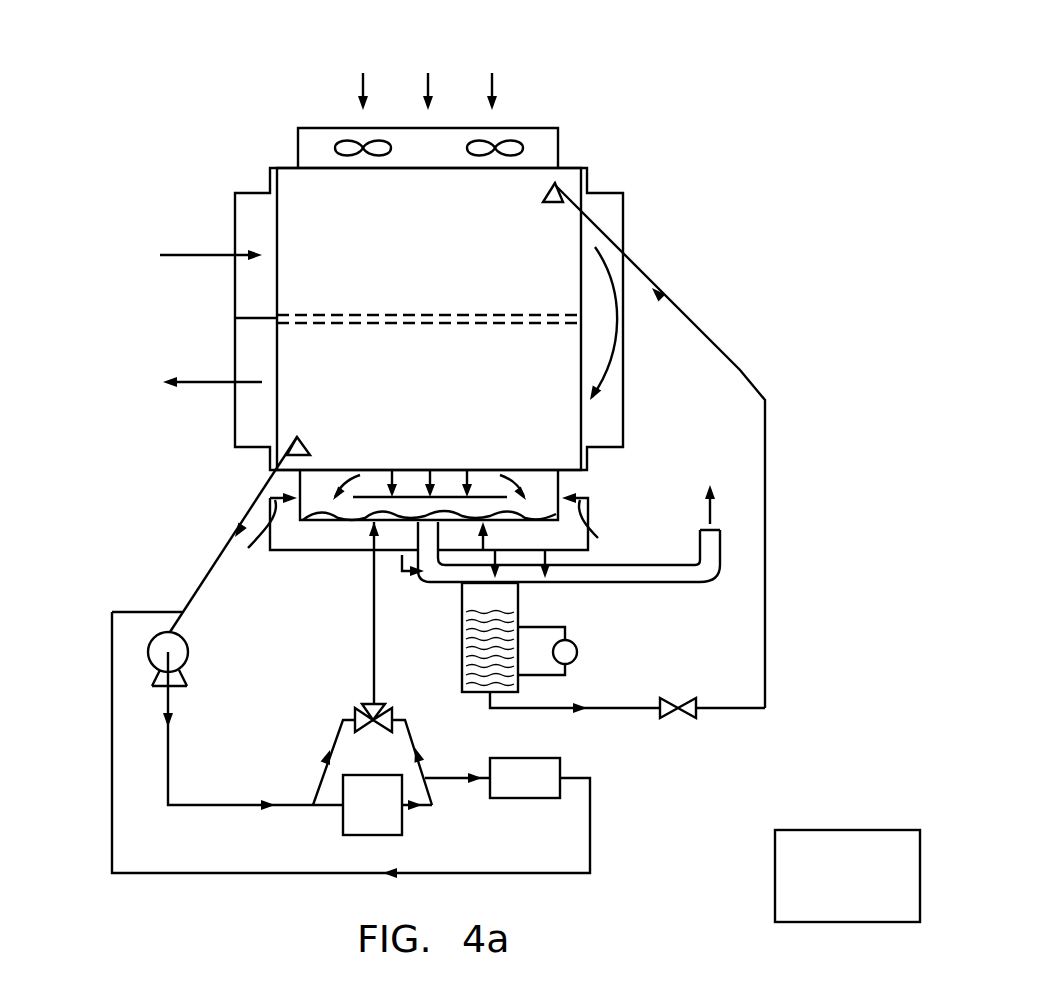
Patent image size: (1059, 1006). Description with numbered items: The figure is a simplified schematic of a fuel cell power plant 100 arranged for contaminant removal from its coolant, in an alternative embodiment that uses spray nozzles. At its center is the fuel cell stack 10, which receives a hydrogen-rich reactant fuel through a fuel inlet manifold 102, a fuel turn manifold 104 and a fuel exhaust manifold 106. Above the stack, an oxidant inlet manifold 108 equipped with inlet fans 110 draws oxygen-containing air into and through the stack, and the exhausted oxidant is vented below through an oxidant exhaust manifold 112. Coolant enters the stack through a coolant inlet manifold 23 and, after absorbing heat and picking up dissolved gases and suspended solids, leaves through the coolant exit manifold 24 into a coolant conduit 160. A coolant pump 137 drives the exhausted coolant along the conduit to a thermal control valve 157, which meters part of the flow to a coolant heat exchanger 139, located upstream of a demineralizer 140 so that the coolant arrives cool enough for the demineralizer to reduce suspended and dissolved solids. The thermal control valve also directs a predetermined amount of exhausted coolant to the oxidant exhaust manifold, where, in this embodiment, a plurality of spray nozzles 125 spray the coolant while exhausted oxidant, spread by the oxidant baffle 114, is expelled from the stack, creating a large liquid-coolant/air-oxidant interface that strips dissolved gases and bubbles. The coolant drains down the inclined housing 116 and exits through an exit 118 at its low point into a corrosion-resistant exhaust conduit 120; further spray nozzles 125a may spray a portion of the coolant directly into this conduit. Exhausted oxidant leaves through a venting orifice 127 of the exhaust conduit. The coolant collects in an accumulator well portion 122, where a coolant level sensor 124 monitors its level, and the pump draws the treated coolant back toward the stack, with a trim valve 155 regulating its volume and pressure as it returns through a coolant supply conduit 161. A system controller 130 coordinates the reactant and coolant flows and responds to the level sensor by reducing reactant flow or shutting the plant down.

The fuel cell power plant 100 is at (190, 108).
The fuel cell stack 10 is at (437, 252).
The coolant inlet manifold 23 is at (556, 196).
The coolant exit manifold 24 is at (300, 447).
The fuel inlet manifold 102 is at (248, 222).
The fuel turn manifold 104 is at (605, 222).
The fuel exhaust manifold 106 is at (250, 412).
The oxidant inlet manifold 108 is at (325, 138).
The inlet fans 110 is at (478, 155).
The oxidant exhaust manifold 112 is at (540, 483).
The oxidant baffle 114 is at (413, 497).
The inclined housing 116 is at (345, 524).
The exit 118 is at (437, 517).
The exhaust conduit 120 is at (603, 577).
The accumulator well portion 122 is at (462, 640).
The coolant level sensor 124 is at (580, 648).
The spray nozzles 125 is at (372, 544).
The spray nozzles 125a is at (402, 555).
The venting orifice 127 is at (703, 531).
The system controller 130 is at (815, 828).
The coolant pump 137 is at (180, 650).
The coolant heat exchanger 139 is at (343, 813).
The demineralizer 140 is at (505, 800).
The trim valve 155 is at (690, 714).
The thermal control valve 157 is at (368, 710).
The coolant conduit 160 is at (197, 586).
The coolant supply conduit 161 is at (742, 372).